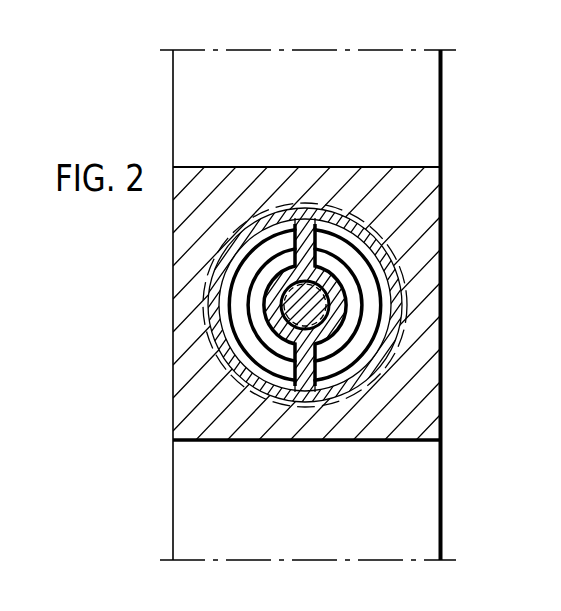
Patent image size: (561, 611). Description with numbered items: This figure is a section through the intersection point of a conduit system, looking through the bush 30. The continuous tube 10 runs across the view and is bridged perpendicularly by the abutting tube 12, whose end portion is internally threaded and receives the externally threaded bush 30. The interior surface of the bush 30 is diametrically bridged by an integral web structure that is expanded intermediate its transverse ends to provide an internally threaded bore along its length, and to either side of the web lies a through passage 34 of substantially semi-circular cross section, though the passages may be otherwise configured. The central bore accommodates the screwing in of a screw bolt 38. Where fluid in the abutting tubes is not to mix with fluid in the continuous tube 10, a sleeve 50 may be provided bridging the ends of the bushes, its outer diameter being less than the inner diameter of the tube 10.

The continuous tube 10 is at (420, 115).
The tube 12 is at (428, 210).
The bush 30 is at (395, 285).
The through passage 34 is at (267, 273).
The screw bolt 38 is at (292, 307).
The sleeve 50 is at (367, 331).